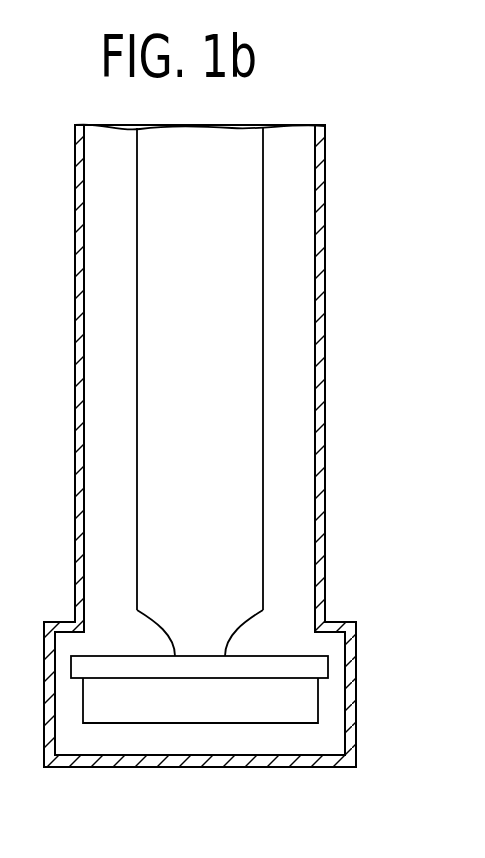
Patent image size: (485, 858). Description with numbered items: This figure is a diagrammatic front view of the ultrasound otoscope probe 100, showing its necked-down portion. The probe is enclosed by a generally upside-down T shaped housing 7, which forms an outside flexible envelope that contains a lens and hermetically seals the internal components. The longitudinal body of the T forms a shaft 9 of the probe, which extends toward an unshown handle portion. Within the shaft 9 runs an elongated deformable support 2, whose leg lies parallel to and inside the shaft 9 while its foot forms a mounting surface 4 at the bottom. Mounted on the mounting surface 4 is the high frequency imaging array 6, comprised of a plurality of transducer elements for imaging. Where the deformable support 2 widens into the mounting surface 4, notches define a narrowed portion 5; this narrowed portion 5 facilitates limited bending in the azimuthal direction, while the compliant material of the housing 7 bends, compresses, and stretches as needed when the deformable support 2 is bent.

The ultrasound otoscope probe 100 is at (189, 468).
The elongated deformable support 2 is at (205, 449).
The mounting surface 4 is at (118, 663).
The narrowed portion 5 is at (160, 624).
The imaging array 6 is at (189, 707).
The housing 7 is at (318, 527).
The shaft 9 is at (336, 340).